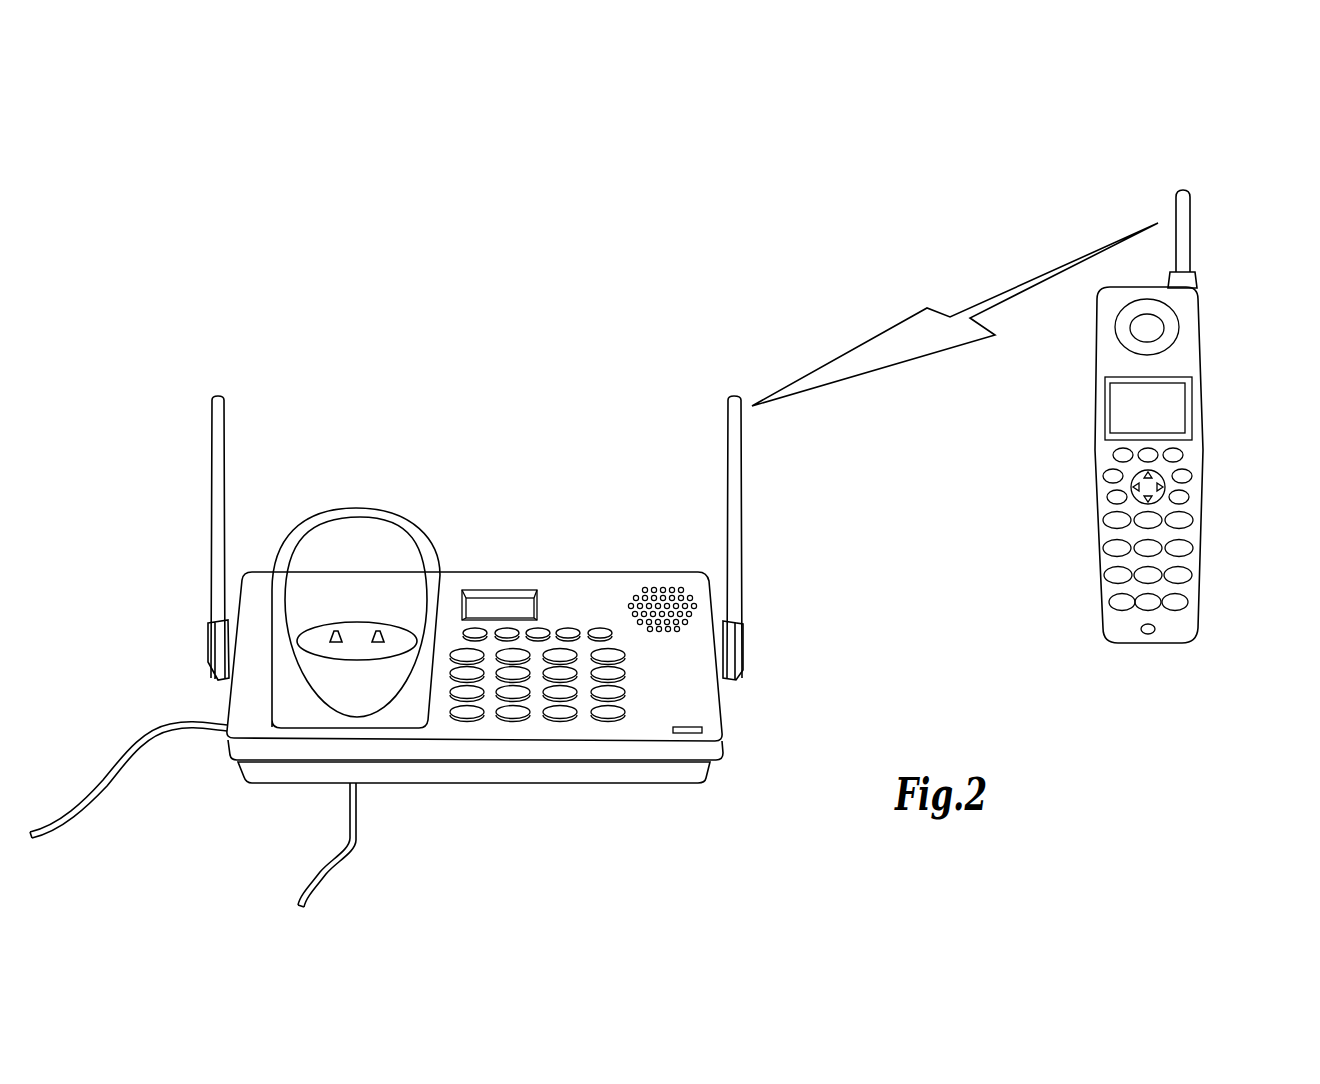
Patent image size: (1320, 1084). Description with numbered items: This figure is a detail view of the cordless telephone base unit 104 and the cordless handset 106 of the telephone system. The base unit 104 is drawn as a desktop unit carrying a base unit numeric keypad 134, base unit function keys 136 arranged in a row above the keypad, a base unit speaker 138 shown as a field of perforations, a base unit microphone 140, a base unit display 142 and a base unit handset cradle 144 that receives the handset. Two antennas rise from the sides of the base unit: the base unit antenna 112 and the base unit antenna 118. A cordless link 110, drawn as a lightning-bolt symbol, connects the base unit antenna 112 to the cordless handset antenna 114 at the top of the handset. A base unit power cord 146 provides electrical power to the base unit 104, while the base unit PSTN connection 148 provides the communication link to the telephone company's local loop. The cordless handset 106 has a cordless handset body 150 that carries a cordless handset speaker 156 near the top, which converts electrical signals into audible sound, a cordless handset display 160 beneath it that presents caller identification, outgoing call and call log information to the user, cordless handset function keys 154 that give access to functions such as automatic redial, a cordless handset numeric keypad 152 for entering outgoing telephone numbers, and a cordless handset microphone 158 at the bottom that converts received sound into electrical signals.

The cordless telephone base unit 104 is at (527, 572).
The cordless handset 106 is at (1097, 530).
The cordless link 110 is at (992, 292).
The base unit antenna 112 is at (733, 393).
The cordless handset antenna 114 is at (1185, 188).
The base unit antenna 118 is at (218, 393).
The base unit numeric keypad 134 is at (563, 655).
The base unit function keys 136 is at (600, 633).
The base unit speaker 138 is at (664, 587).
The base unit microphone 140 is at (692, 727).
The base unit display 142 is at (497, 605).
The base unit handset cradle 144 is at (380, 595).
The base unit power cord 146 is at (110, 773).
The base unit PSTN connection 148 is at (356, 833).
The cordless handset body 150 is at (1103, 317).
The cordless handset numeric keypad 152 is at (1191, 548).
The cordless handset function keys 154 is at (1192, 476).
The cordless handset speaker 156 is at (1165, 328).
The cordless handset microphone 158 is at (1148, 634).
The cordless handset display 160 is at (1185, 407).